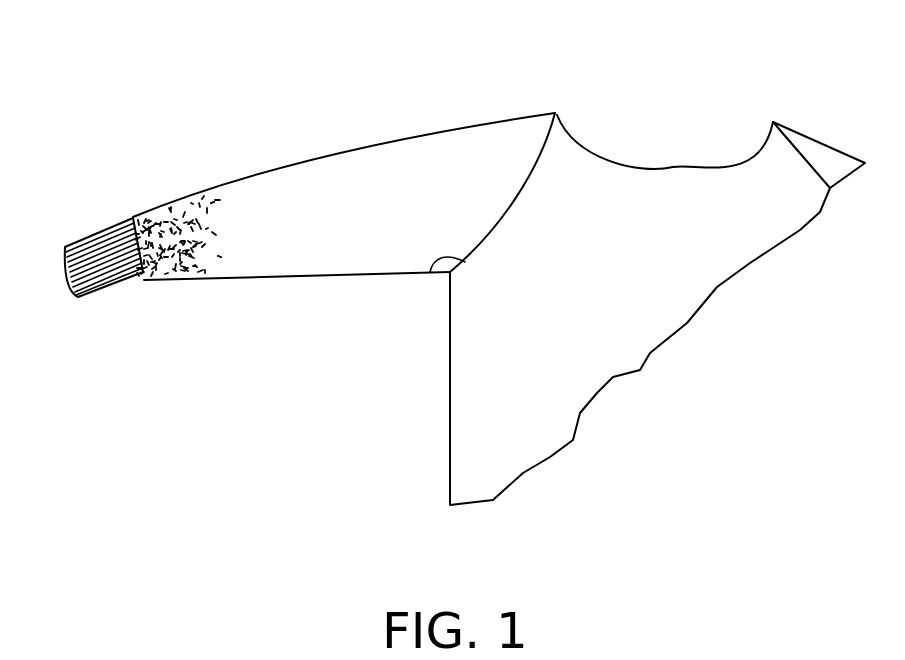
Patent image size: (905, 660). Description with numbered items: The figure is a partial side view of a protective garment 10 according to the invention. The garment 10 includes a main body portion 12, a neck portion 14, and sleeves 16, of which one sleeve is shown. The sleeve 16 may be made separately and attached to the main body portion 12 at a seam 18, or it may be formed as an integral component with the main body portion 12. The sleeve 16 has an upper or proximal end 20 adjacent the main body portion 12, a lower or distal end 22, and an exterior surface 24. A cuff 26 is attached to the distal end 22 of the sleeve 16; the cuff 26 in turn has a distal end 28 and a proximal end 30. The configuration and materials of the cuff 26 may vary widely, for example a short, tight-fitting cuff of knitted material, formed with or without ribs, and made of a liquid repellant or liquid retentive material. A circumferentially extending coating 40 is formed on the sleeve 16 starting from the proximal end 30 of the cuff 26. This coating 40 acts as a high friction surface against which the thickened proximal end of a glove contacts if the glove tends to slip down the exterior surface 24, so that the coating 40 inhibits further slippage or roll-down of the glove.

The protective garment 10 is at (440, 261).
The main body portion 12 is at (473, 367).
The neck portion 14 is at (580, 143).
The sleeve 16 is at (463, 140).
The seam 18 is at (503, 217).
The upper or proximal end 20 is at (430, 272).
The lower or distal end 22 is at (157, 275).
The exterior surface 24 is at (293, 211).
The cuff 26 is at (79, 255).
The distal end of cuff 28 is at (72, 278).
The proximal end of cuff 30 is at (130, 268).
The circumferentially extending coating 40 is at (183, 275).